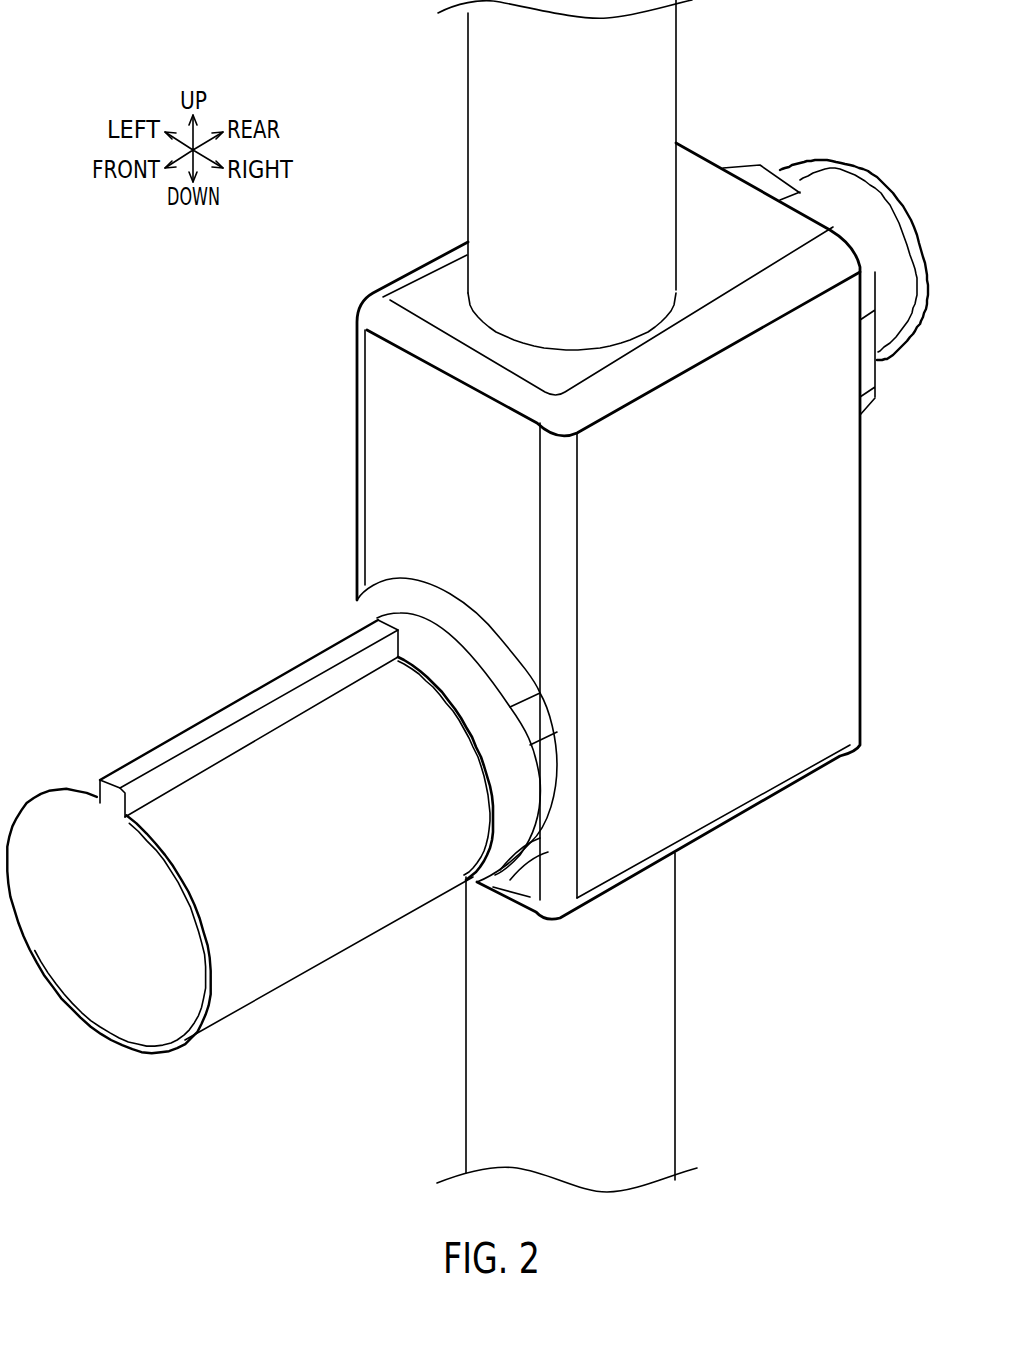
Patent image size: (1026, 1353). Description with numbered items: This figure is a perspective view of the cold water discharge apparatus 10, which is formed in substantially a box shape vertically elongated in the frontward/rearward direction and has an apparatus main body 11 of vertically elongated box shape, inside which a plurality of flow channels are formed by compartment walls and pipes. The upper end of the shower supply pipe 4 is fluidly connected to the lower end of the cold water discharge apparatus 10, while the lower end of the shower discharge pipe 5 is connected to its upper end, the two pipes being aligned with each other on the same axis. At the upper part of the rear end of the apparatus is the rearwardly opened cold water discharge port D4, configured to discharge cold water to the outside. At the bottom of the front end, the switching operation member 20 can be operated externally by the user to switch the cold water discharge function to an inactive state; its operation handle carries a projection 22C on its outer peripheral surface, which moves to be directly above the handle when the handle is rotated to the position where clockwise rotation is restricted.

The shower supply pipe 4 is at (627, 1002).
The shower discharge pipe 5 is at (630, 87).
The cold water discharge apparatus 10 is at (715, 207).
The apparatus main body 11 is at (722, 572).
The cold water discharge port D4 is at (870, 190).
The switching operation member 20 is at (110, 962).
The projection 22C is at (168, 751).